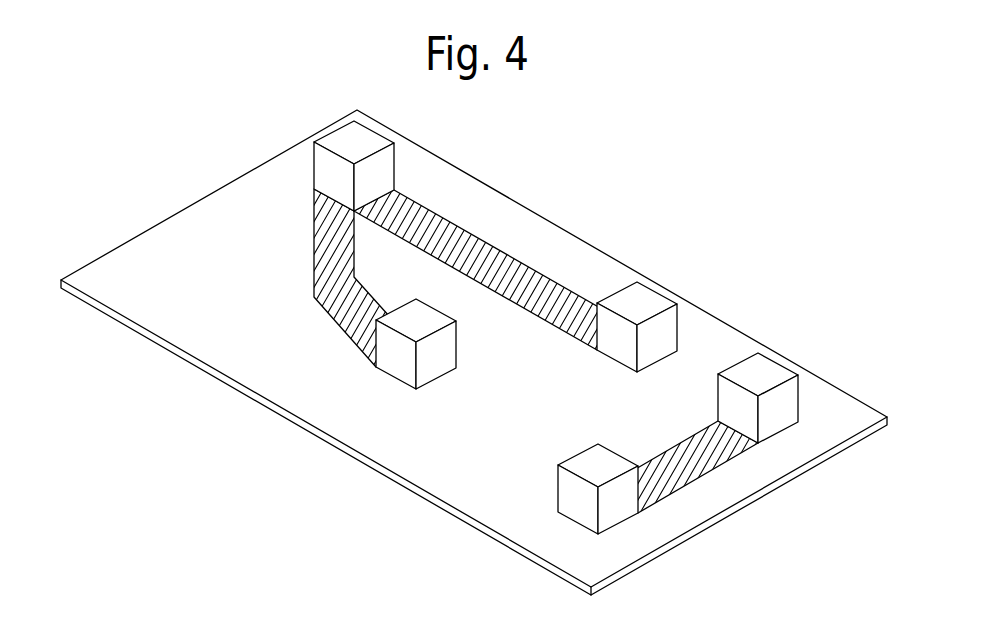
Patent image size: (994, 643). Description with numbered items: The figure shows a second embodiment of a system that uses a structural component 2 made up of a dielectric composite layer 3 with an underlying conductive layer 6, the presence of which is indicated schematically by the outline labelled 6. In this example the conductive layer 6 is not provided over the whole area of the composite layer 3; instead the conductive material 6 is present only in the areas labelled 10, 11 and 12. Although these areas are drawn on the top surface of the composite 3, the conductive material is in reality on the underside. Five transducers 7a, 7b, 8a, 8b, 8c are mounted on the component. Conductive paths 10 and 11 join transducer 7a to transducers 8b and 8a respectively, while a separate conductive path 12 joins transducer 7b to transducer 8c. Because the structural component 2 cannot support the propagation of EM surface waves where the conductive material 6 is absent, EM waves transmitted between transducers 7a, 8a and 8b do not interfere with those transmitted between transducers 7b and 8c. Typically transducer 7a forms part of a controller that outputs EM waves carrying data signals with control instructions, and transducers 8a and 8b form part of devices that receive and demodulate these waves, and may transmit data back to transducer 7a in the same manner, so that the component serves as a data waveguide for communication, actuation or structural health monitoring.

The structural component 2 is at (474, 365).
The dielectric composite layer 3 is at (757, 472).
The conductive layer 6 is at (633, 573).
The transducer 7a is at (333, 137).
The transducer 7b is at (557, 490).
The transducer 8a is at (647, 302).
The transducer 8b is at (392, 377).
The transducer 8c is at (775, 373).
The conductive path 10 is at (317, 252).
The conductive path 11 is at (527, 262).
The conductive path 12 is at (687, 488).